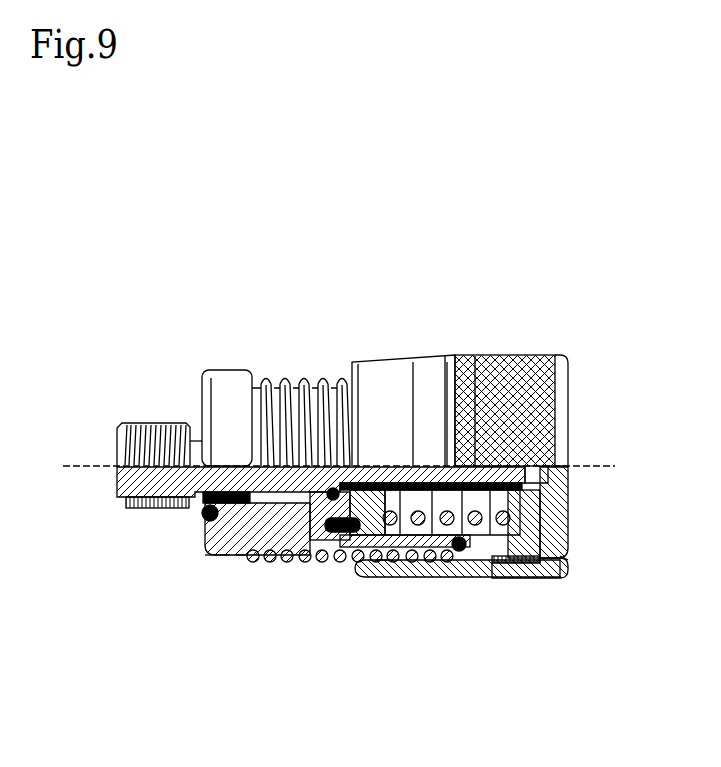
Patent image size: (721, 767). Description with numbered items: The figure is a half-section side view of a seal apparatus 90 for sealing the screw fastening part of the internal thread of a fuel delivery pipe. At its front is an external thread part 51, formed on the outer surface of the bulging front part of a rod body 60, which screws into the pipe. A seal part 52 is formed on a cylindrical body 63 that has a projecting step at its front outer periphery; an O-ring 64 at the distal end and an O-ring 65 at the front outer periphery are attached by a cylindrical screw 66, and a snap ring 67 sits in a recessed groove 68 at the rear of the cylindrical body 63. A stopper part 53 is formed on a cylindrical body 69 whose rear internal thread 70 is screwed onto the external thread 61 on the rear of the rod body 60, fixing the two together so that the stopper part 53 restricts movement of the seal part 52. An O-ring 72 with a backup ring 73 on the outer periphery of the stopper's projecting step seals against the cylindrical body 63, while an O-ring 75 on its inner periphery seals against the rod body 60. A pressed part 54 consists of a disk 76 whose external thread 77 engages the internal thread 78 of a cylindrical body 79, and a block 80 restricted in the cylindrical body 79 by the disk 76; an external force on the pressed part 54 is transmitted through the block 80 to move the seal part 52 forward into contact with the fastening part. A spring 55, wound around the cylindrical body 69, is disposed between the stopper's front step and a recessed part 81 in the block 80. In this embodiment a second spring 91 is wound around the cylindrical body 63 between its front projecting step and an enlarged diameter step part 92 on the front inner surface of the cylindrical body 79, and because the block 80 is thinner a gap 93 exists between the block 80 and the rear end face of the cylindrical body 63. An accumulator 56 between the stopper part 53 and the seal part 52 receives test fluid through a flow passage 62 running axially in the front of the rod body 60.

The external thread part 51 is at (135, 422).
The seal part 52 is at (215, 558).
The stopper part 53 is at (363, 560).
The pressed part 54 is at (538, 577).
The spring 55 is at (402, 562).
The accumulator 56 is at (270, 375).
The rod body 60 is at (273, 562).
The external thread 61 is at (445, 573).
The flow passage 62 is at (202, 372).
The cylindrical body 63 is at (240, 560).
The O-ring 64 is at (205, 538).
The O-ring 65 is at (245, 493).
The cylindrical screw 66 is at (198, 507).
The snap ring 67 is at (467, 562).
The recessed groove 68 is at (447, 462).
The cylindrical body 69 is at (413, 460).
The internal thread 70 is at (475, 470).
The O-ring 72 is at (360, 470).
The backup ring 73 is at (367, 462).
The O-ring 75 is at (330, 445).
The disk 76 is at (566, 522).
The external thread 77 is at (563, 557).
The internal thread 78 is at (552, 575).
The cylindrical body 79 is at (560, 355).
The block 80 is at (516, 357).
The recessed part 81 is at (503, 573).
The seal apparatus 90 is at (393, 356).
The second spring 91 is at (317, 457).
The enlarged diameter step part 92 is at (383, 570).
The gap 93 is at (488, 577).